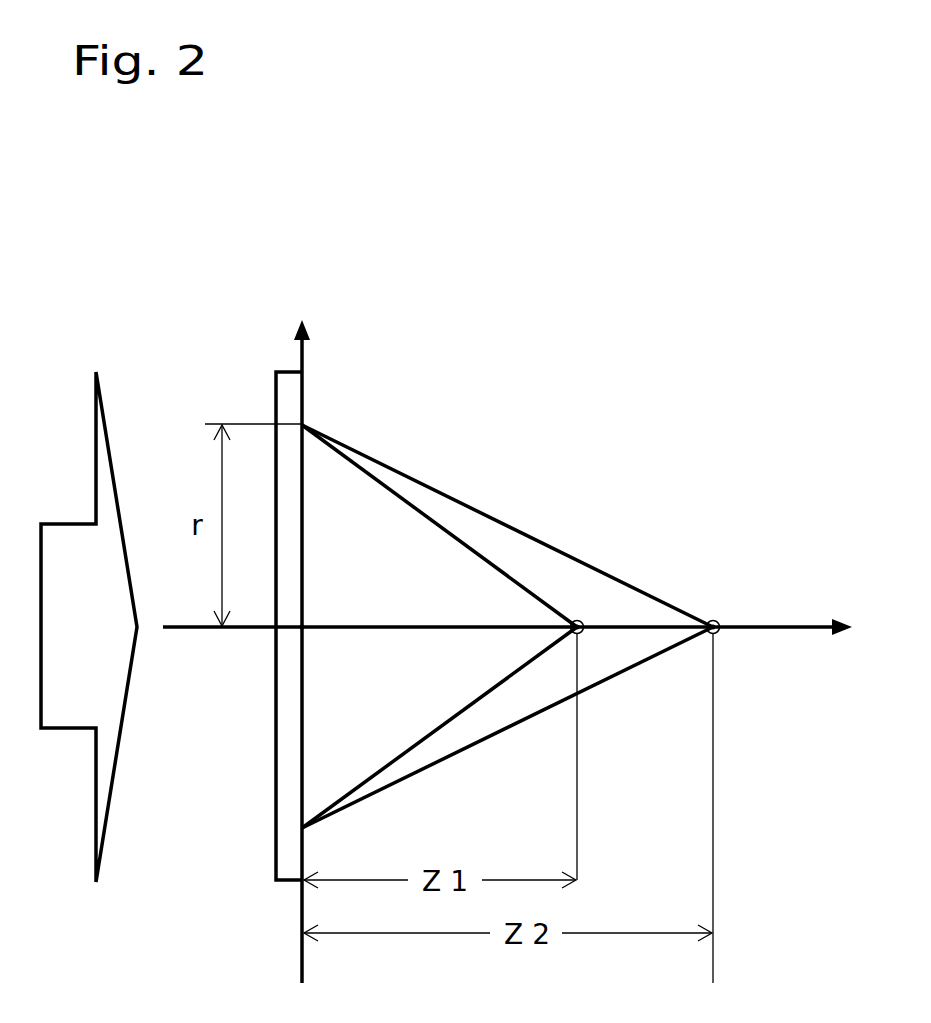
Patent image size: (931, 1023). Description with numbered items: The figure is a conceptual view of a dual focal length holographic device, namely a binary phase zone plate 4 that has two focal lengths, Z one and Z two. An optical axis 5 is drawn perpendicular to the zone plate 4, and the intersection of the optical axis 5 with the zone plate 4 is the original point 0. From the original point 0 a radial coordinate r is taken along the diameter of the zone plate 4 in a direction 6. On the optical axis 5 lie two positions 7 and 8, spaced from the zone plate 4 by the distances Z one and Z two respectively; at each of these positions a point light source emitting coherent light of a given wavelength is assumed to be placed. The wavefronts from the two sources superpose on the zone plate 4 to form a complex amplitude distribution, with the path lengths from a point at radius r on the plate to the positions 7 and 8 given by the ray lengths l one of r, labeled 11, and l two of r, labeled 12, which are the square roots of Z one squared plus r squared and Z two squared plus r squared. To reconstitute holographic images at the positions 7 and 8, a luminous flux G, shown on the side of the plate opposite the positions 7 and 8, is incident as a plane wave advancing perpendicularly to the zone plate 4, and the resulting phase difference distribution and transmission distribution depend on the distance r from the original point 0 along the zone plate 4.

The luminous flux G is at (65, 705).
The binary phase zone plate 4 is at (285, 768).
The optical axis 5 is at (806, 625).
The direction along the diameter 6 is at (305, 522).
The original point 0 is at (308, 632).
The position of first point light source 7 is at (582, 612).
The position of second point light source 8 is at (718, 633).
The first light ray l1(r) 11 is at (423, 515).
The second light ray l2(r) 12 is at (498, 520).